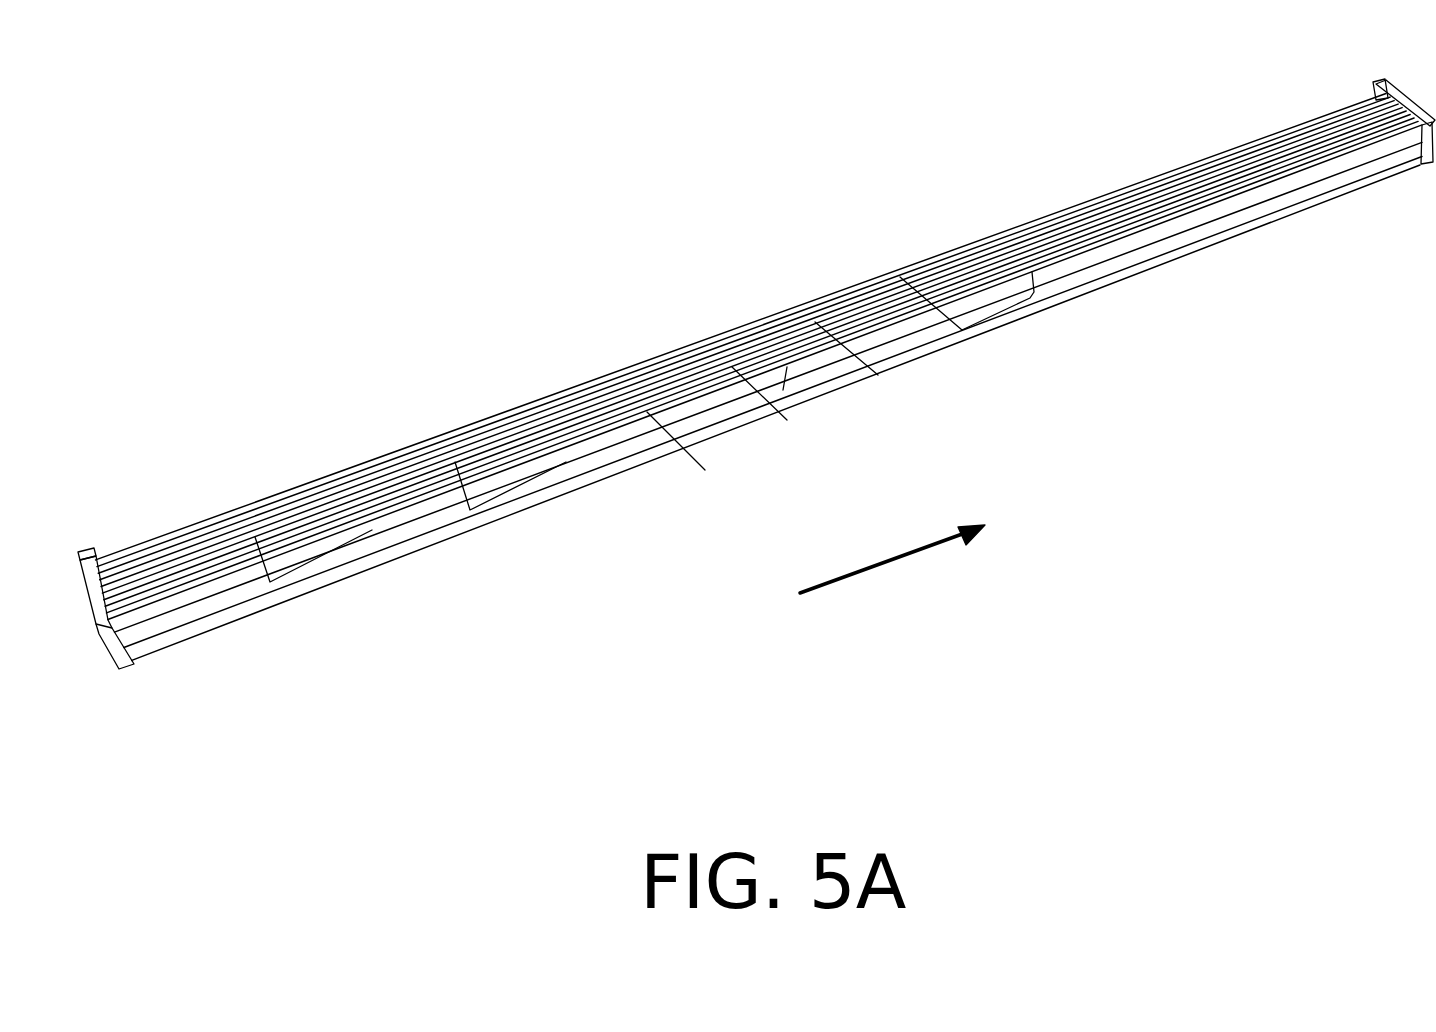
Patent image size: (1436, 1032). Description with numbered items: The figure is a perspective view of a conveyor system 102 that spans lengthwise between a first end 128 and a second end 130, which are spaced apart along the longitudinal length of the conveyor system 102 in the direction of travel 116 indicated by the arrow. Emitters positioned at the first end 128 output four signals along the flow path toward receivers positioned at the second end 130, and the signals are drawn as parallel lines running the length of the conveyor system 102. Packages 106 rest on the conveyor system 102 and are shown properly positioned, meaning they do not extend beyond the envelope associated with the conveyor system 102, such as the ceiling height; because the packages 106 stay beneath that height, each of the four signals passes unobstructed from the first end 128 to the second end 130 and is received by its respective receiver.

The conveyor system 102 is at (756, 351).
The packages 106 is at (525, 482).
The direction of travel 116 is at (902, 578).
The first end 128 is at (96, 536).
The second end 130 is at (1369, 79).